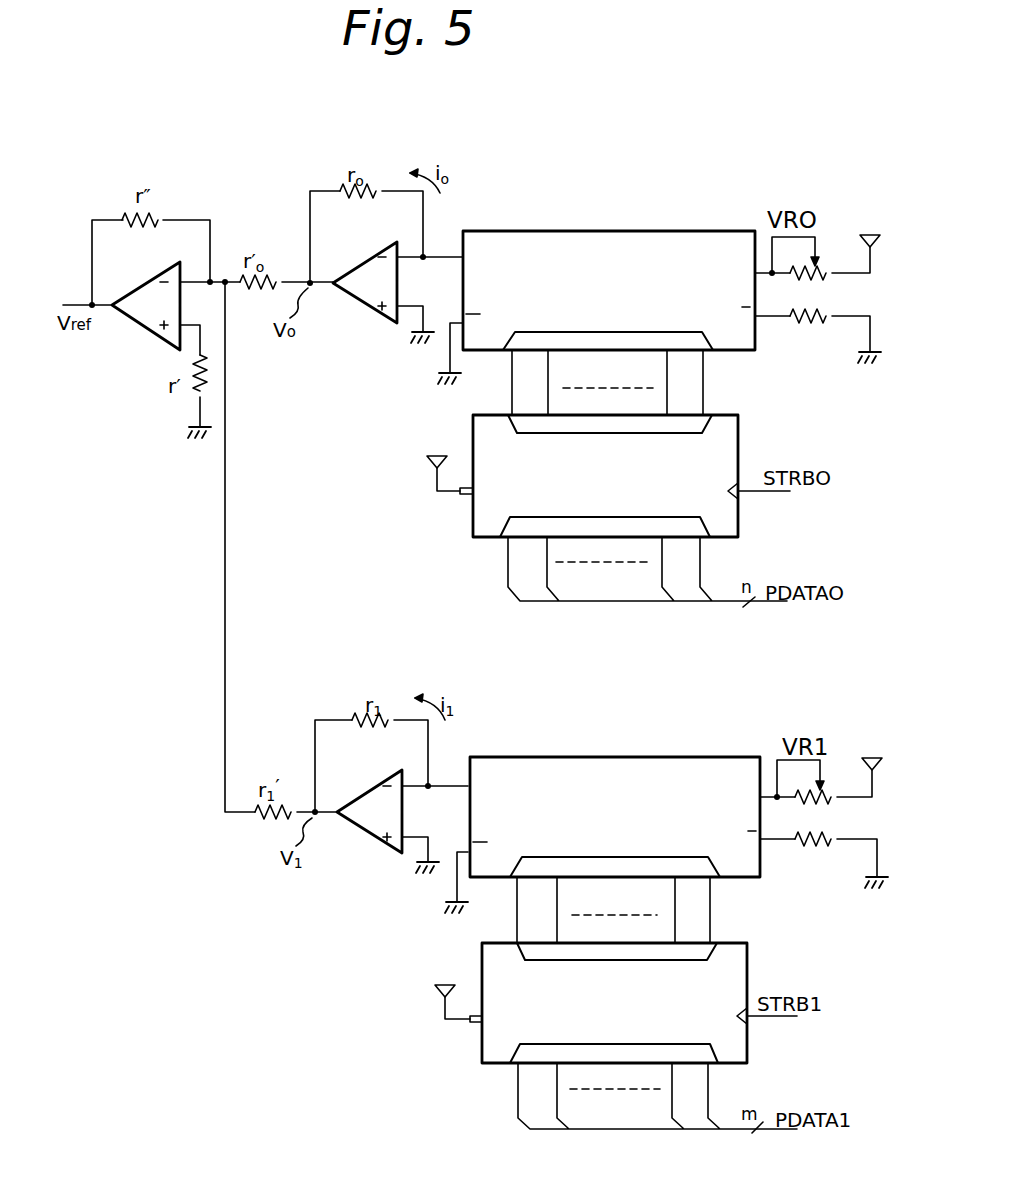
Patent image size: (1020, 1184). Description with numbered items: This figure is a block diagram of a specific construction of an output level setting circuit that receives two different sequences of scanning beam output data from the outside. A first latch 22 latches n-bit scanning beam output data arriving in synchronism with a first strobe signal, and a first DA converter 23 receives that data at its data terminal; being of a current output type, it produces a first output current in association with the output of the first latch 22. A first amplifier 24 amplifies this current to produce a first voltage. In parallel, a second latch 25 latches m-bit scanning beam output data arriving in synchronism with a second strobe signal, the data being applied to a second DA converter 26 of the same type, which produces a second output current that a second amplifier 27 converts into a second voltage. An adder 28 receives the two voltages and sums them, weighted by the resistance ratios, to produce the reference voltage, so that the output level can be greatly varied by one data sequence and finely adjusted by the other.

The latch 22 is at (472, 528).
The DA converter 23 is at (605, 230).
The amplifier 24 is at (370, 310).
The latch 25 is at (480, 1050).
The DA converter 26 is at (600, 756).
The amplifier 27 is at (377, 840).
The adder 28 is at (142, 328).